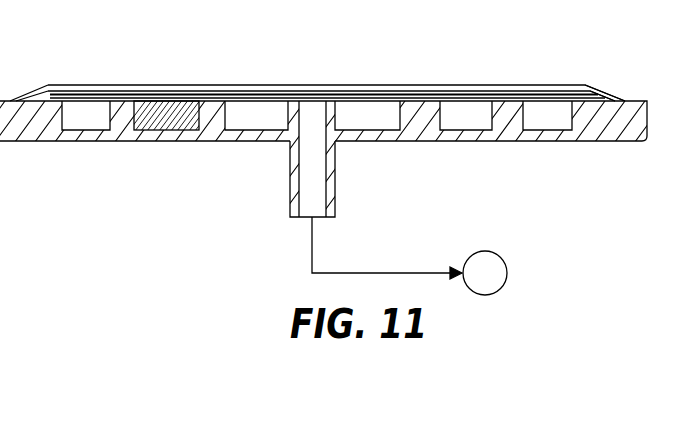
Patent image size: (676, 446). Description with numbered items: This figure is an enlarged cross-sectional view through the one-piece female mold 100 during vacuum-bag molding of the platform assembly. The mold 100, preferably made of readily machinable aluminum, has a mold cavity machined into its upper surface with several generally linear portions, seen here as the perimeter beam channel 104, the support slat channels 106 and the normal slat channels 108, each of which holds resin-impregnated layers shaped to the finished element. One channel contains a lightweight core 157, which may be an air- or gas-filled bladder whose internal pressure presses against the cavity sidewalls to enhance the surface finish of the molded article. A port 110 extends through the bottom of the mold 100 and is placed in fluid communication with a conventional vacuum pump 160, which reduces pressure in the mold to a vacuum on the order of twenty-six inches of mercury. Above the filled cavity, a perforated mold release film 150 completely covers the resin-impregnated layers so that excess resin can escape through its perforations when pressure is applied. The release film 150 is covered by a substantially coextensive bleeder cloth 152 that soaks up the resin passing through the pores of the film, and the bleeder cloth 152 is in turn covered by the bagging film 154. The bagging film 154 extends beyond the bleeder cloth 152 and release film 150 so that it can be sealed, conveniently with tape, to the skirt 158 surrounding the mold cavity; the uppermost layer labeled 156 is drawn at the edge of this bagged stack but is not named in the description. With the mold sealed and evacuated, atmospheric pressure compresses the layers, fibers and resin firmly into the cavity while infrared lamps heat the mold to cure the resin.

The female mold 100 is at (647, 130).
The perimeter beam channel 104 is at (84, 130).
The support slat channels 106 is at (480, 130).
The normal slat channels 108 is at (249, 130).
The port 110 is at (308, 195).
The perforated mold release film 150 is at (473, 107).
The bleeder cloth 152 is at (417, 101).
The bagging film 154 is at (347, 86).
The top layer 156 is at (603, 92).
The lightweight core 157 is at (158, 110).
The skirt 158 is at (638, 101).
The vacuum pump 160 is at (498, 273).